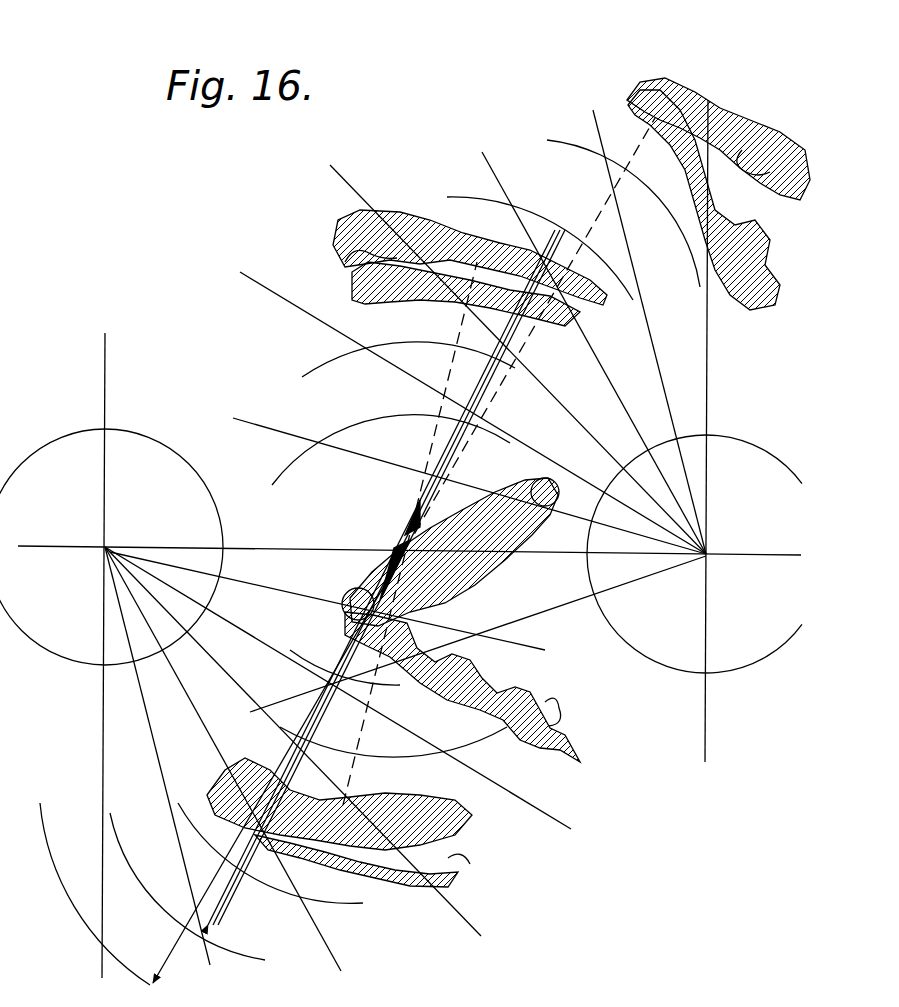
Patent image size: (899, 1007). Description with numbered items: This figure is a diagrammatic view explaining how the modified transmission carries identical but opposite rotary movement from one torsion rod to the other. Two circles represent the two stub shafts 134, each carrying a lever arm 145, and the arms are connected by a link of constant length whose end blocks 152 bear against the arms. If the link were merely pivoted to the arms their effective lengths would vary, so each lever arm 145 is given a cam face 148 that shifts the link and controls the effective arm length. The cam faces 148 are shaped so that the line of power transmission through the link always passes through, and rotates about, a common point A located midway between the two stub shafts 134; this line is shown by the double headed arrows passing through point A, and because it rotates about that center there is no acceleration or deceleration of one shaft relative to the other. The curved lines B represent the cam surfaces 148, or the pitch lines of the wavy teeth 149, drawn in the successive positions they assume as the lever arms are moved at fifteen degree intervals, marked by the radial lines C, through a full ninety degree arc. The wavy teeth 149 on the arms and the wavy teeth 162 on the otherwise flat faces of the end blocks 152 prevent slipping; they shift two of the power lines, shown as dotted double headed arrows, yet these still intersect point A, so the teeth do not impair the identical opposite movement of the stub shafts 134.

The stub shaft 134 is at (156, 438).
The lever arm 145 is at (519, 488).
The cam face 148 is at (466, 582).
The wavy teeth 149 is at (454, 604).
The end block 152 is at (418, 226).
The wavy teeth 162 is at (537, 700).
The common point A is at (402, 548).
The curved lines B is at (348, 427).
The radial lines C is at (536, 446).